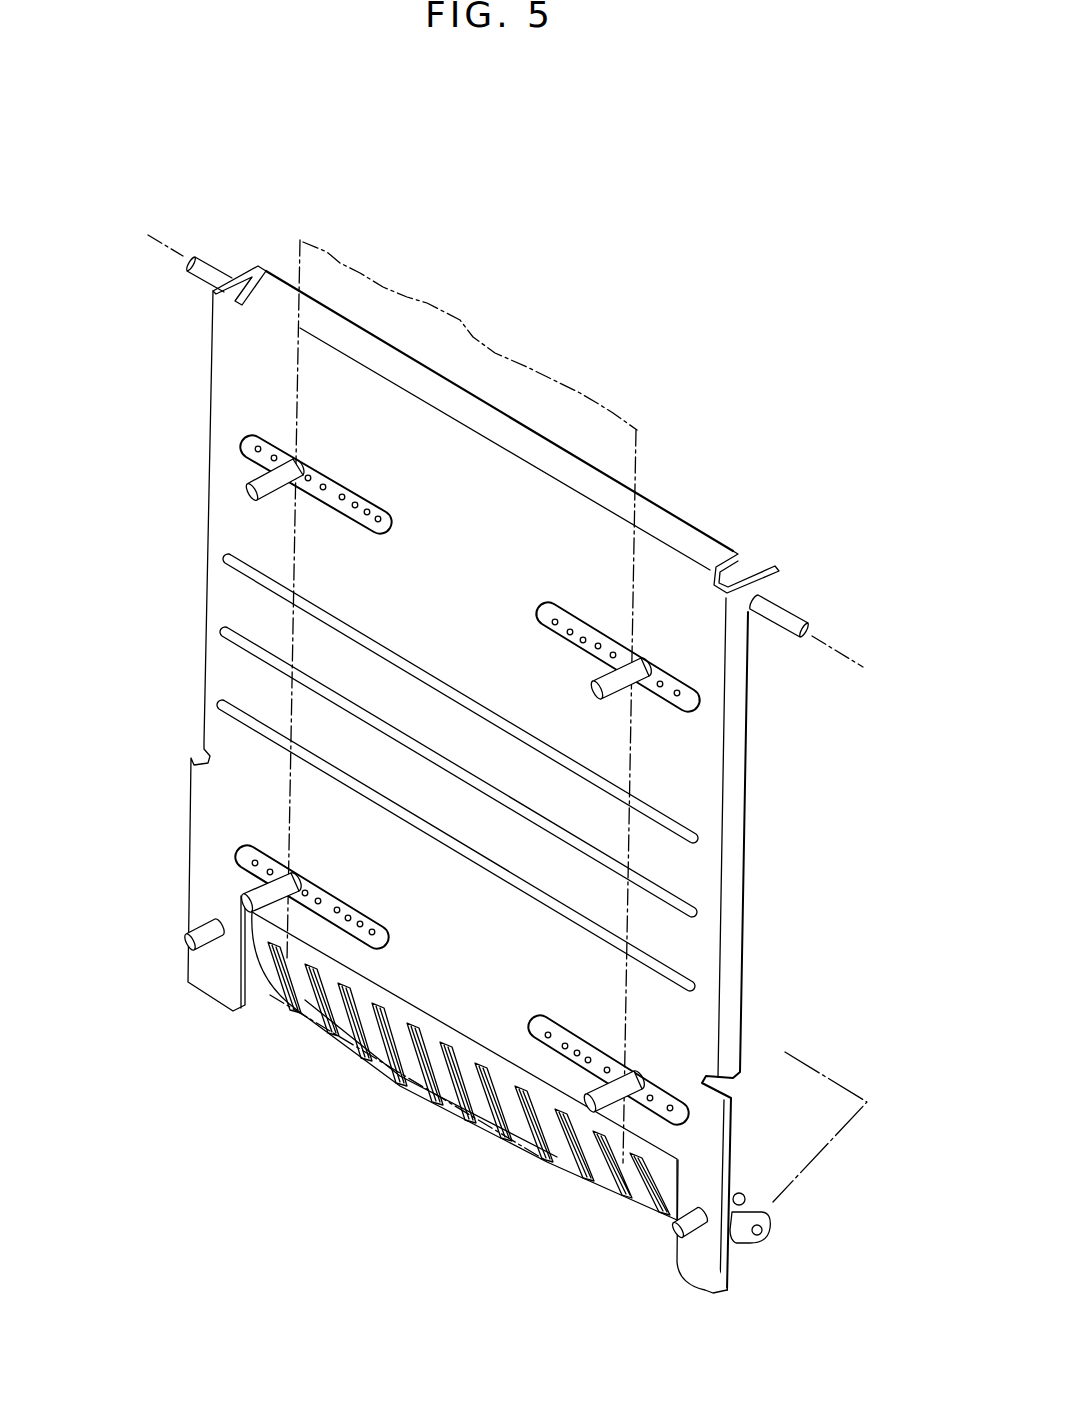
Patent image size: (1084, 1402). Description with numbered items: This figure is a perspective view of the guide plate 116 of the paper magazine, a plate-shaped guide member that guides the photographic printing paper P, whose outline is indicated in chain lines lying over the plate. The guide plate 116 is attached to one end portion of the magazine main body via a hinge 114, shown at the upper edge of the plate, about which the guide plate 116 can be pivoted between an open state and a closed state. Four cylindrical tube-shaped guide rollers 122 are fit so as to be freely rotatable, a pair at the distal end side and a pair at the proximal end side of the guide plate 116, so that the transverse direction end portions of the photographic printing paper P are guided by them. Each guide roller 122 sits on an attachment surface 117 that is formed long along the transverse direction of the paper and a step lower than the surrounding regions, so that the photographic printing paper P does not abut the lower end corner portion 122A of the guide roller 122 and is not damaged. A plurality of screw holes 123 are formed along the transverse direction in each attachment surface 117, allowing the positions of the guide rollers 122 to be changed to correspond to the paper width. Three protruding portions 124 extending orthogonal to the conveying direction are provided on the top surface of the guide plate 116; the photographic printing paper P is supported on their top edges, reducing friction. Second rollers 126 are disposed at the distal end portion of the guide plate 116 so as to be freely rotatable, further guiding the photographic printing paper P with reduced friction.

The hinge 114 is at (793, 607).
The guide plate 116 is at (747, 783).
The attachment surfaces 117 is at (247, 437).
The guide roller 122 is at (247, 490).
The lower end corner portion 122A is at (297, 470).
The screw holes 123 is at (247, 455).
The protruding portions 124 is at (694, 835).
The second rollers 126 is at (733, 1200).
The photographic printing paper P is at (627, 412).